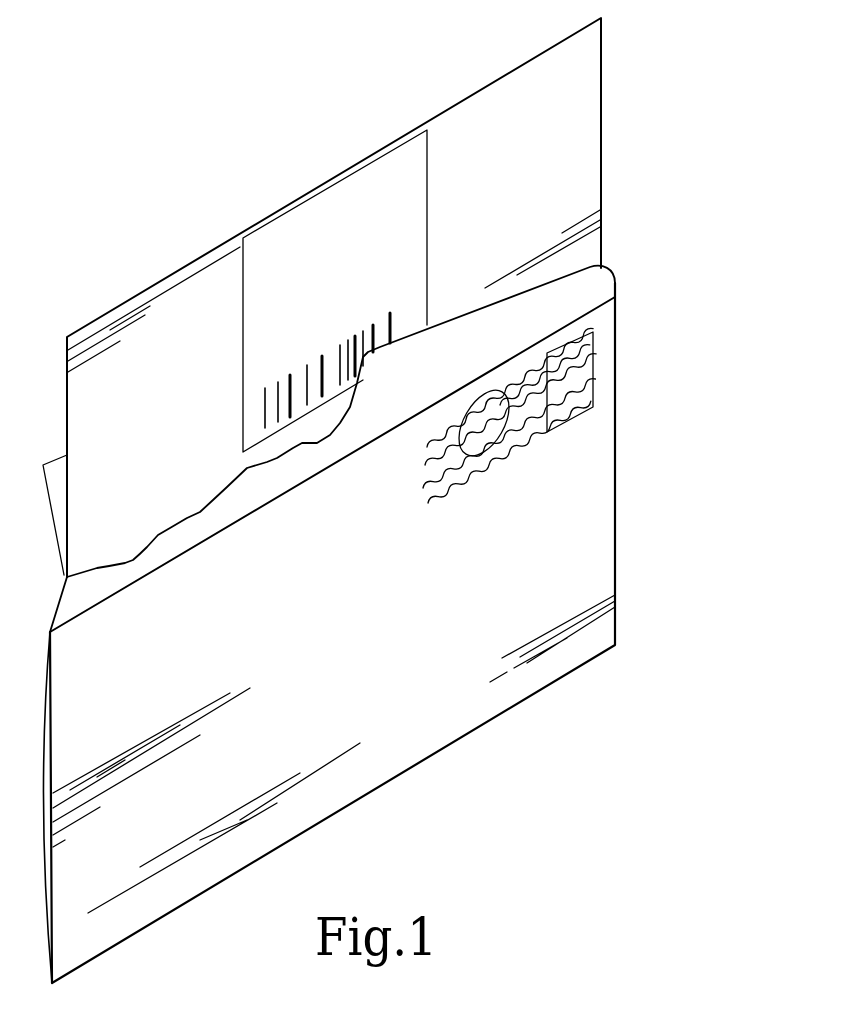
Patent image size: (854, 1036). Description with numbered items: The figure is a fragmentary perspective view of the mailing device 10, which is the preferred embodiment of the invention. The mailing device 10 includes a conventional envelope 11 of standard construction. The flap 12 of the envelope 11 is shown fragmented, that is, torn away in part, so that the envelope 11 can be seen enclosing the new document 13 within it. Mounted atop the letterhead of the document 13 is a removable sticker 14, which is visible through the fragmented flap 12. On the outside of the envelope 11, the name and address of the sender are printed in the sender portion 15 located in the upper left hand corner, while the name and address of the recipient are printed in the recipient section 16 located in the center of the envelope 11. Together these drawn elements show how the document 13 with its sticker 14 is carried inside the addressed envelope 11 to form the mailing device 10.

The mailing device 10 is at (676, 412).
The envelope 11 is at (600, 520).
The flap 12 is at (615, 283).
The document 13 is at (592, 172).
The removable sticker 14 is at (255, 232).
The sender portion 15 is at (223, 538).
The recipient section 16 is at (302, 612).